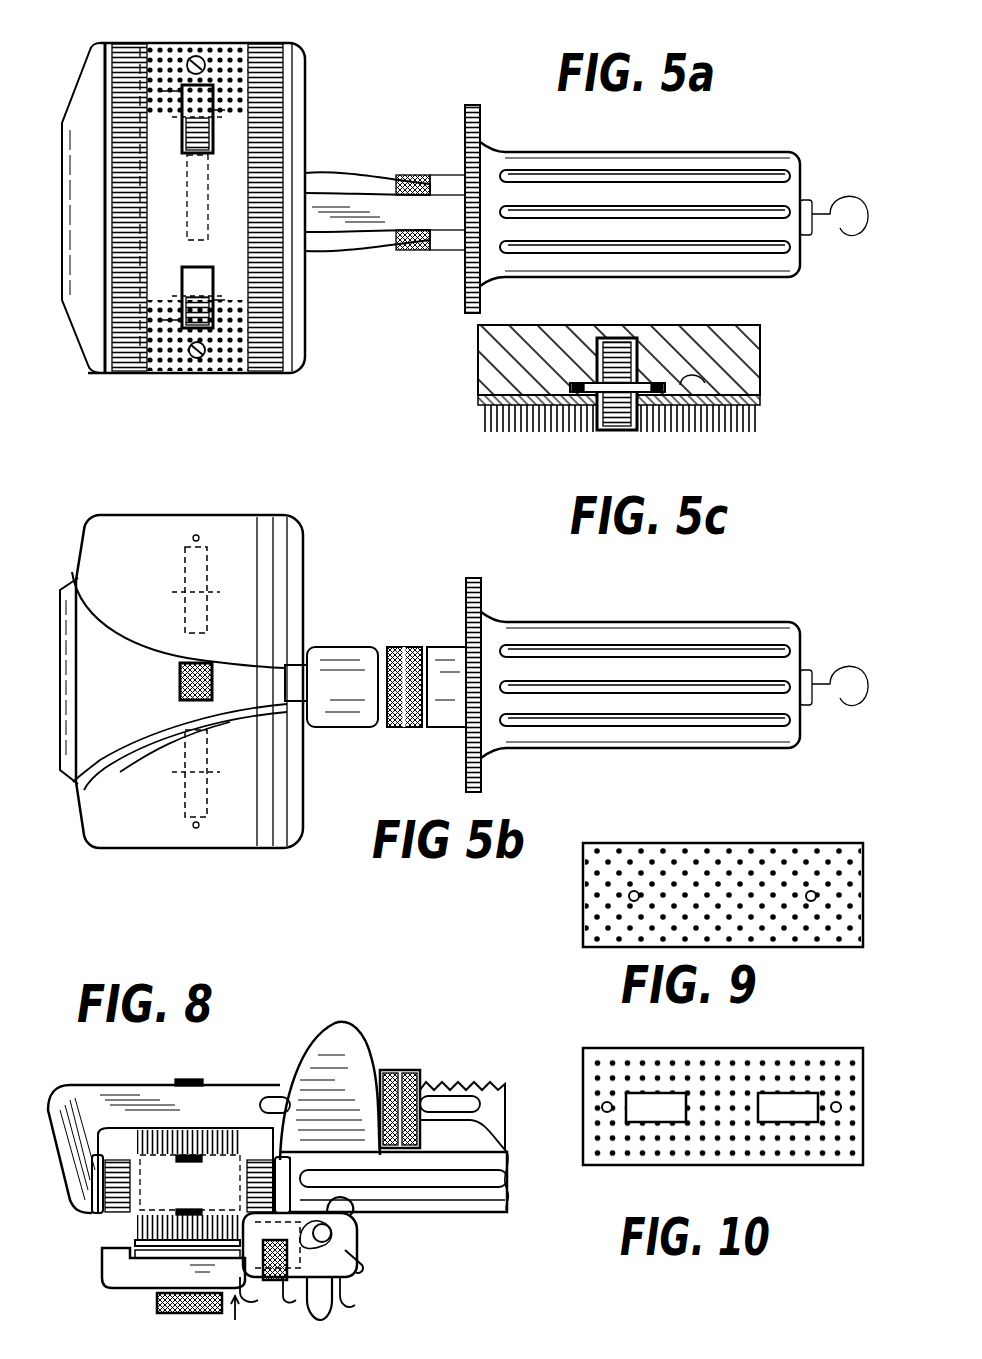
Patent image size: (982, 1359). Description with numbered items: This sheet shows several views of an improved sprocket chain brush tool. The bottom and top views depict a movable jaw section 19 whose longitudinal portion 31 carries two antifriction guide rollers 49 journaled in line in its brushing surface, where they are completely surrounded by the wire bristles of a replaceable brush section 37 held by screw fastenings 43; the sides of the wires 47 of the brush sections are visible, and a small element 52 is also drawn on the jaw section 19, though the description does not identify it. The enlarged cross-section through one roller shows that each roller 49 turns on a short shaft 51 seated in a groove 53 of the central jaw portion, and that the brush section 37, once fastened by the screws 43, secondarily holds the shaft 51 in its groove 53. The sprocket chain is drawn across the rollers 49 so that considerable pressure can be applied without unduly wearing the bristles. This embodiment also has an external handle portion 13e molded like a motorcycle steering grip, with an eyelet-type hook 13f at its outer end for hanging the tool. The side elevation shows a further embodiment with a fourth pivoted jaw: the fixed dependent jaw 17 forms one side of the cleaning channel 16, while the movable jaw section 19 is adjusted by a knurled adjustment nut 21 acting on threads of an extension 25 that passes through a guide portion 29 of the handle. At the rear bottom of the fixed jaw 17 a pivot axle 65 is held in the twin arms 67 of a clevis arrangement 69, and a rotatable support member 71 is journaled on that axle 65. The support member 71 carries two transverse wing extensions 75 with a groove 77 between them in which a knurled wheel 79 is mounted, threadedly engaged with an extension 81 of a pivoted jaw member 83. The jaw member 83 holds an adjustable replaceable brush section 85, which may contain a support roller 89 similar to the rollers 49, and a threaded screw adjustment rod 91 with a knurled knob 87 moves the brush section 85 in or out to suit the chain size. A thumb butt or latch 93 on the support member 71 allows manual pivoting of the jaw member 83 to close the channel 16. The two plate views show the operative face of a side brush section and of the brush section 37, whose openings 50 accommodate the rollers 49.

In FIG. 5a, the external handle portion 13e is at (660, 152).
In FIG. 5b, the external handle portion 13e is at (557, 627).
In FIG. 5a, the eyelet-type hook 13f is at (837, 197).
In FIG. 5b, the eyelet-type hook 13f is at (843, 667).
In FIG. 8, the sprocket chain brushing and cleaning channel 16 is at (227, 1167).
In FIG. 8, the fixed dependent jaw 17 is at (293, 1167).
In FIG. 5b, the movable jaw section 19 is at (140, 530).
In FIG. 8, the knurled adjustment nut 21 is at (390, 1068).
In FIG. 8, the extension 25 is at (497, 1097).
In FIG. 8, the guide portion 29 is at (353, 1037).
In FIG. 10, the longitudinal portion 31 is at (778, 1048).
In FIG. 5a, the replaceable brush section 37 is at (200, 377).
In FIG. 5c, the replaceable brush section 37 is at (763, 402).
In FIG. 9, the replaceable brush section 37 is at (795, 843).
In FIG. 5a, the screw fastenings 43 is at (207, 60).
In FIG. 5b, the screw fastenings 43 is at (193, 537).
In FIG. 5a, the wires 47 is at (230, 373).
In FIG. 5c, the wires 47 is at (760, 420).
In FIG. 5a, the antifriction guide rollers 49 is at (190, 127).
In FIG. 5c, the antifriction guide rollers 49 is at (617, 432).
In FIG. 5b, the antifriction guide rollers 49 is at (193, 612).
In FIG. 8, the antifriction guide rollers 49 is at (192, 1164).
In FIG. 5a, the openings 50 is at (182, 92).
In FIG. 10, the openings 50 is at (655, 1108).
In FIG. 5a, the short shafts 51 is at (213, 118).
In FIG. 5c, the short shafts 51 is at (587, 398).
In FIG. 5b, the catch 52 is at (180, 680).
In FIG. 8, the catch 52 is at (192, 1079).
In FIG. 5c, the grooves 53 is at (690, 380).
In FIG. 8, the pivot axle 65 is at (350, 1232).
In FIG. 8, the twin arms 67 is at (337, 1232).
In FIG. 8, the clevis arrangement 69 is at (347, 1203).
In FIG. 8, the rotatable support member 71 is at (235, 1320).
In FIG. 8, the transverse wing extensions 75 is at (254, 1282).
In FIG. 8, the groove 77 is at (297, 1282).
In FIG. 8, the knurled wheel 79 is at (258, 1272).
In FIG. 8, the extension 81 is at (355, 1265).
In FIG. 8, the pivoted jaw member 83 is at (117, 1288).
In FIG. 8, the adjustable replaceable brush section 85 is at (140, 1217).
In FIG. 8, the knurled knob 87 is at (165, 1313).
In FIG. 8, the support roller 89 is at (183, 1213).
In FIG. 8, the threaded screw adjustment rod 91 is at (187, 1287).
In FIG. 8, the thumb butt or latch 93 is at (345, 1290).